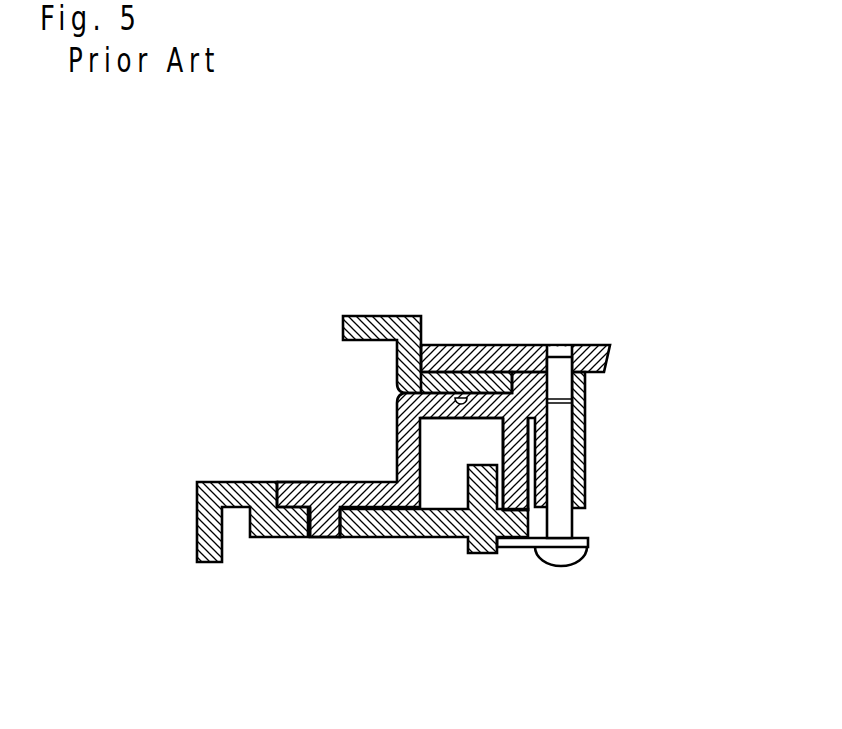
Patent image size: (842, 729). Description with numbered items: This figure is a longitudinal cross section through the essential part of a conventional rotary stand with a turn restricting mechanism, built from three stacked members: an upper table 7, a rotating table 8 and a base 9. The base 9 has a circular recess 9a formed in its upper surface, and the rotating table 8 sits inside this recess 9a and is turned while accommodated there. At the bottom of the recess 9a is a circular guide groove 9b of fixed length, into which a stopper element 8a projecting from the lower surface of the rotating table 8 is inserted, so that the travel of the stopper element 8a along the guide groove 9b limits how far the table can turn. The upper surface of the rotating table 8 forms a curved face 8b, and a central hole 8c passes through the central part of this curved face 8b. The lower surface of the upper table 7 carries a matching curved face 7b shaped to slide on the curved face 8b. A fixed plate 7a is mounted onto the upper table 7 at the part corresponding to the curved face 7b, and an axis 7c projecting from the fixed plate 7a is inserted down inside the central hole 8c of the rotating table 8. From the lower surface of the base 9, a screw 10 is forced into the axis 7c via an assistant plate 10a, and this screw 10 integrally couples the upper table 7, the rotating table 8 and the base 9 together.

The upper table 7 is at (373, 316).
The fixed plate 7a is at (515, 345).
The curved face 7b is at (473, 345).
The axis 7c is at (586, 437).
The rotating table 8 is at (376, 446).
The stopper element 8a is at (318, 538).
The curved face 8b is at (425, 398).
The central hole 8c is at (530, 460).
The base 9 is at (220, 482).
The circular recess 9a is at (293, 482).
The circular guide groove 9b is at (334, 538).
The screw 10 is at (562, 566).
The assistant plate 10a is at (522, 546).